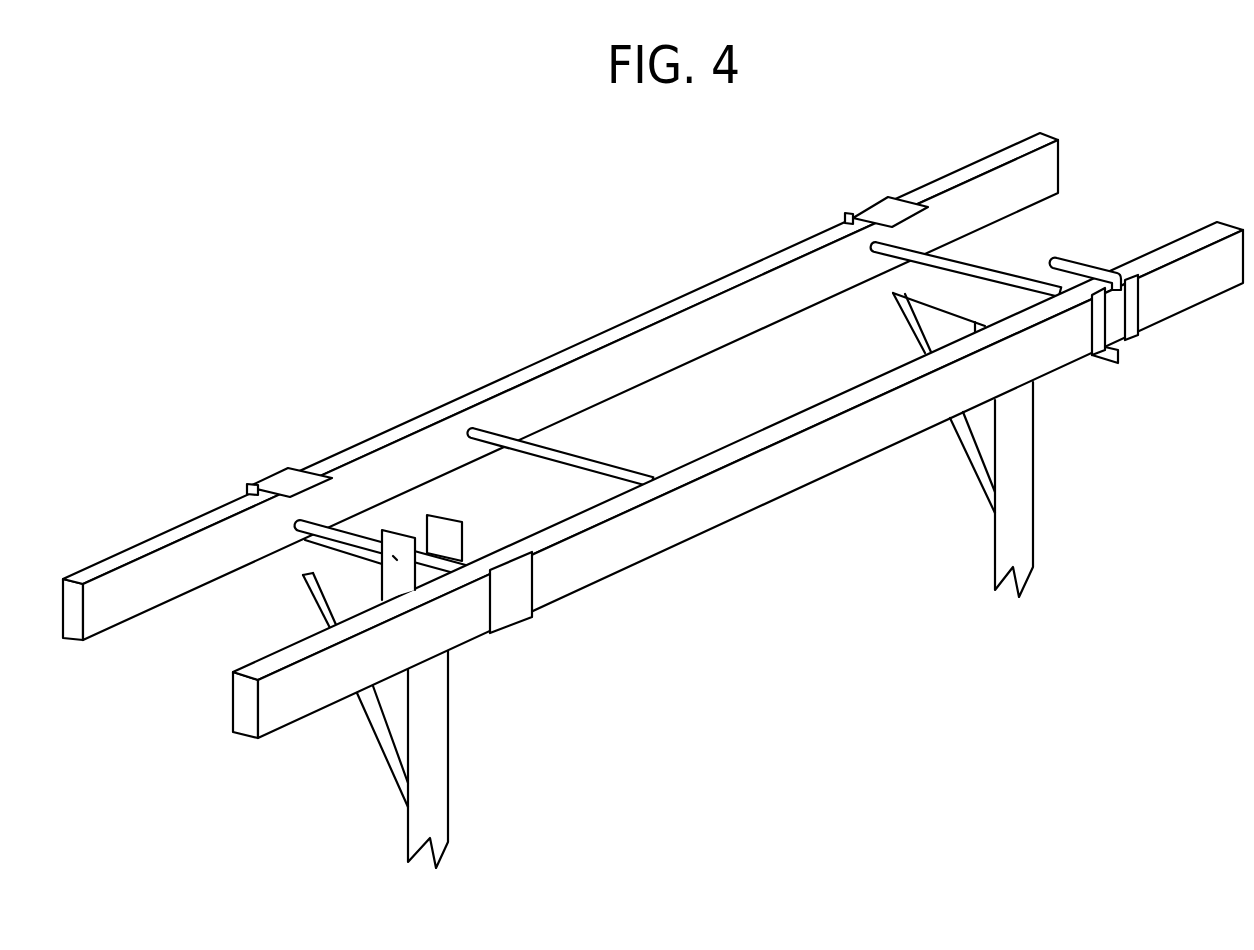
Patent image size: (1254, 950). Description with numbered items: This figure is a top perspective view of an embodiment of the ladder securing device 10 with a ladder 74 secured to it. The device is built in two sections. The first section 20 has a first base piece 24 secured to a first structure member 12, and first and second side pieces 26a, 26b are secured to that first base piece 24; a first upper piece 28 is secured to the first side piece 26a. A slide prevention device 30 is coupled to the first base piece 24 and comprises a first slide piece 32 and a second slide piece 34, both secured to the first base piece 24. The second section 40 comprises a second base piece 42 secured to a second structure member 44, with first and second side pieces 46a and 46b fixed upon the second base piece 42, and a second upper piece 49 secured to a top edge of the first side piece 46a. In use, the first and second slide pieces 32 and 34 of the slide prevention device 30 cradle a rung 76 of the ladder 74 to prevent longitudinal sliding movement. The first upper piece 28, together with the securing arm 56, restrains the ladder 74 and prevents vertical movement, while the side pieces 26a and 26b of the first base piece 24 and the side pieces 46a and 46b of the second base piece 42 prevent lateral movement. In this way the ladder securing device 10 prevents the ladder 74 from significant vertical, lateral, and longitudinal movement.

The ladder securing device 10 is at (608, 225).
The first structure member 12 is at (425, 773).
The first section 20 is at (383, 765).
The first base piece 24 is at (296, 562).
The first side piece 26a is at (252, 486).
The second side piece 26b is at (510, 597).
The first upper piece 28 is at (302, 475).
The slide prevention device 30 is at (372, 572).
The first slide piece 32 is at (395, 558).
The second slide piece 34 is at (453, 534).
The second section 40 is at (972, 477).
The second base piece 42 is at (895, 283).
The second structure member 44 is at (1015, 462).
The first side piece 46a is at (849, 215).
The second side piece 46b is at (1098, 325).
The second upper piece 49 is at (897, 208).
The securing arm 56 is at (1078, 273).
The ladder 74 is at (518, 410).
The rung 76 is at (450, 563).